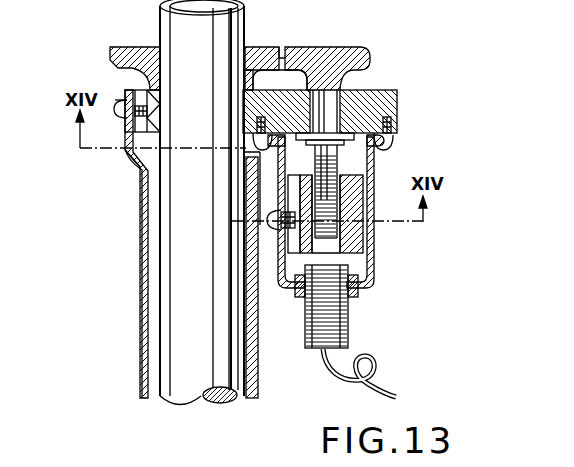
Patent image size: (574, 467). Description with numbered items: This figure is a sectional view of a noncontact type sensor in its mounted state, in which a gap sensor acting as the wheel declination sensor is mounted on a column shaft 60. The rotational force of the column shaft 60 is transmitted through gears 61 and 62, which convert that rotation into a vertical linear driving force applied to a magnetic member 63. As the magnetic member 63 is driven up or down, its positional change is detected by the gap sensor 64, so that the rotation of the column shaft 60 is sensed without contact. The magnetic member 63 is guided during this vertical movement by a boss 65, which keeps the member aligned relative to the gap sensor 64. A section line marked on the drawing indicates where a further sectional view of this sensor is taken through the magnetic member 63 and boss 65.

The column shaft 60 is at (166, 245).
The gear 61 is at (271, 48).
The gear 62 is at (343, 48).
The magnetic member 63 is at (357, 199).
The gap sensor 64 is at (338, 328).
The boss 65 is at (283, 225).